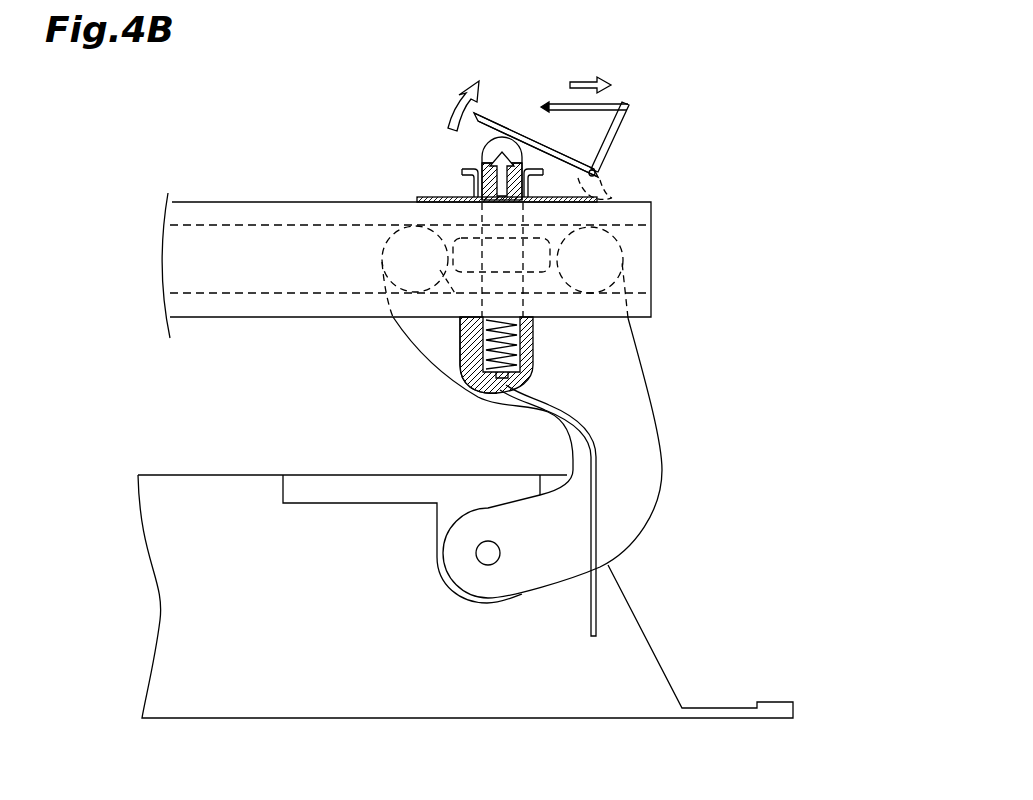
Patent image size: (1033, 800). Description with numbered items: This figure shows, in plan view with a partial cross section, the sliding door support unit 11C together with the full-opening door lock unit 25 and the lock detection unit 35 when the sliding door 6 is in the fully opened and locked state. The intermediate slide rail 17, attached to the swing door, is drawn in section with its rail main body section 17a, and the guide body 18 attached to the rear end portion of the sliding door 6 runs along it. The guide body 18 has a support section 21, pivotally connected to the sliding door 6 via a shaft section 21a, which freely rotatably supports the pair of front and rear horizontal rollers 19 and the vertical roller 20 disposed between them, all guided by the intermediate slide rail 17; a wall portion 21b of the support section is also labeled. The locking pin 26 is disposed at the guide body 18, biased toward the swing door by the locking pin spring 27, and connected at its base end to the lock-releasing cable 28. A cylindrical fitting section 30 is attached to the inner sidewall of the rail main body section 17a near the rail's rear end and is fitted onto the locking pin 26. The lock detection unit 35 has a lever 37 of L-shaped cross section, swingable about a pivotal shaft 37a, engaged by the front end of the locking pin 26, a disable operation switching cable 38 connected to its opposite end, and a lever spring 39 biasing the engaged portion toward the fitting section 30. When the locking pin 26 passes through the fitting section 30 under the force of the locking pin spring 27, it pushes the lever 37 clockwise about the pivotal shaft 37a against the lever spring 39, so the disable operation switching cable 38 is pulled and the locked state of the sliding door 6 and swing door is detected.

The sliding door 6 is at (350, 683).
The sliding door support unit 11C is at (233, 116).
The intermediate slide rail 17 is at (406, 235).
The rail main body section 17a is at (257, 202).
The guide body 18 is at (646, 377).
The horizontal rollers 19 is at (405, 258).
The vertical roller 20 is at (537, 273).
The support section 21 is at (566, 459).
The shaft section 21a is at (484, 565).
The spring housing wall 21b is at (463, 342).
The full-opening door lock unit 25 is at (460, 154).
The locking pin 26 is at (497, 143).
The locking pin spring 27 is at (527, 350).
The lock-releasing cable 28 is at (596, 528).
The fitting section 30 is at (470, 187).
The lock detection unit 35 is at (637, 99).
The lever 37 is at (612, 130).
The pivotal shaft 37a is at (598, 175).
The disable operation switching cable 38 is at (558, 103).
The lever spring 39 is at (602, 169).